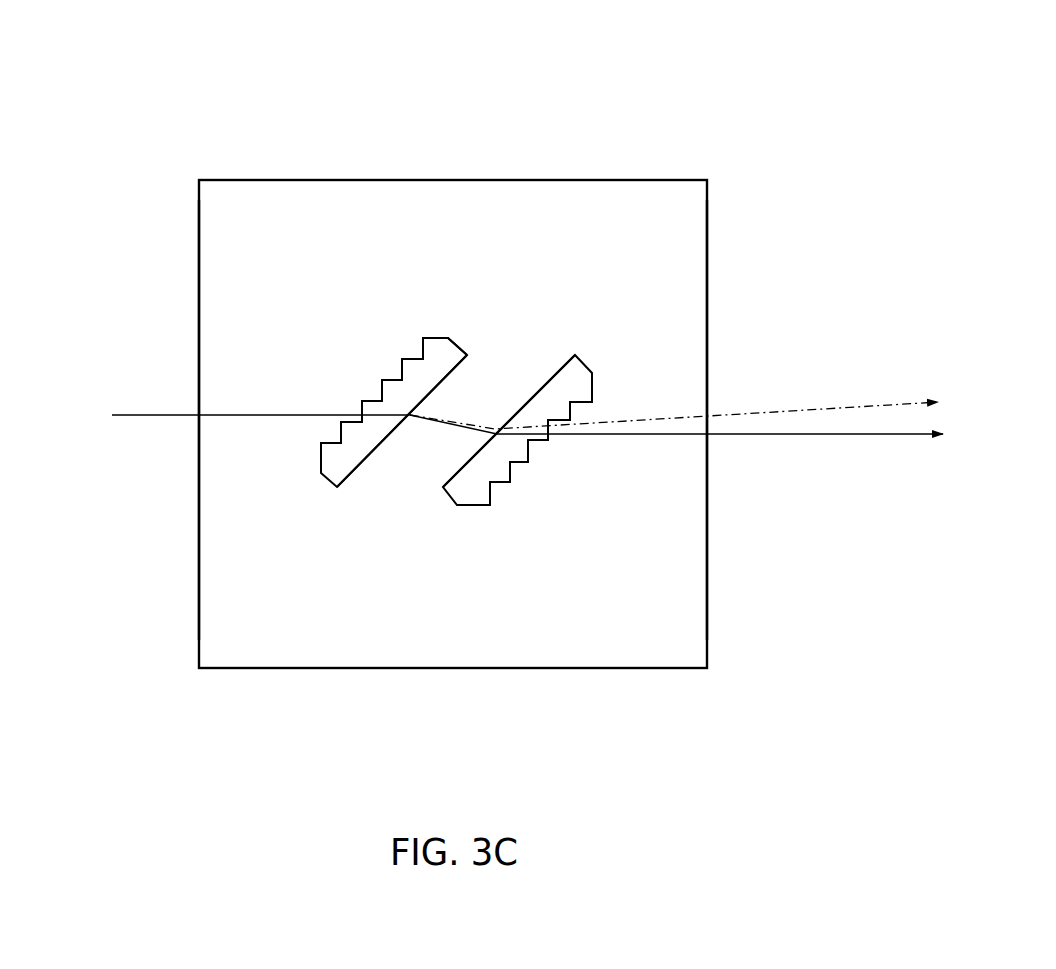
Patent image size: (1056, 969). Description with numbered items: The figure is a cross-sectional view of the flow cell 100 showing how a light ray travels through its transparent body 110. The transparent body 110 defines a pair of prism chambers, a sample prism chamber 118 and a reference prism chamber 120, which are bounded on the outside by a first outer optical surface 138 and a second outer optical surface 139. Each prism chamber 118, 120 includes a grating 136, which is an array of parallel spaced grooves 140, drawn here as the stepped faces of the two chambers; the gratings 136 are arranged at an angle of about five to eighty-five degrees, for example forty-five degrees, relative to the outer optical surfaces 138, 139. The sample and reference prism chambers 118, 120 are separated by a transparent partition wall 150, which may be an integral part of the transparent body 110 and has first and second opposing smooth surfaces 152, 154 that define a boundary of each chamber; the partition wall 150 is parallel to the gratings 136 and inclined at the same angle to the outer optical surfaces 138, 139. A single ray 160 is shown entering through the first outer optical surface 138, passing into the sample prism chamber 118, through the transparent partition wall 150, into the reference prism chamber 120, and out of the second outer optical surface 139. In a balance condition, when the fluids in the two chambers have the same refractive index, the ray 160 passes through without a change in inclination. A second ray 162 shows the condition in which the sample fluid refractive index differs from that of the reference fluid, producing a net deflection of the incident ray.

The flow cell 100 is at (263, 104).
The transparent body 110 is at (587, 188).
The sample prism chamber 118 is at (349, 456).
The reference prism chamber 120 is at (557, 393).
The grating 136 is at (355, 382).
The first outer optical surface 138 is at (196, 237).
The second outer optical surface 139 is at (711, 555).
The groove 140 is at (415, 350).
The transparent partition wall 150 is at (397, 470).
The first smooth surface 152 is at (392, 438).
The second smooth surface 154 is at (530, 403).
The ray 160 is at (564, 431).
The second ray 162 is at (709, 409).